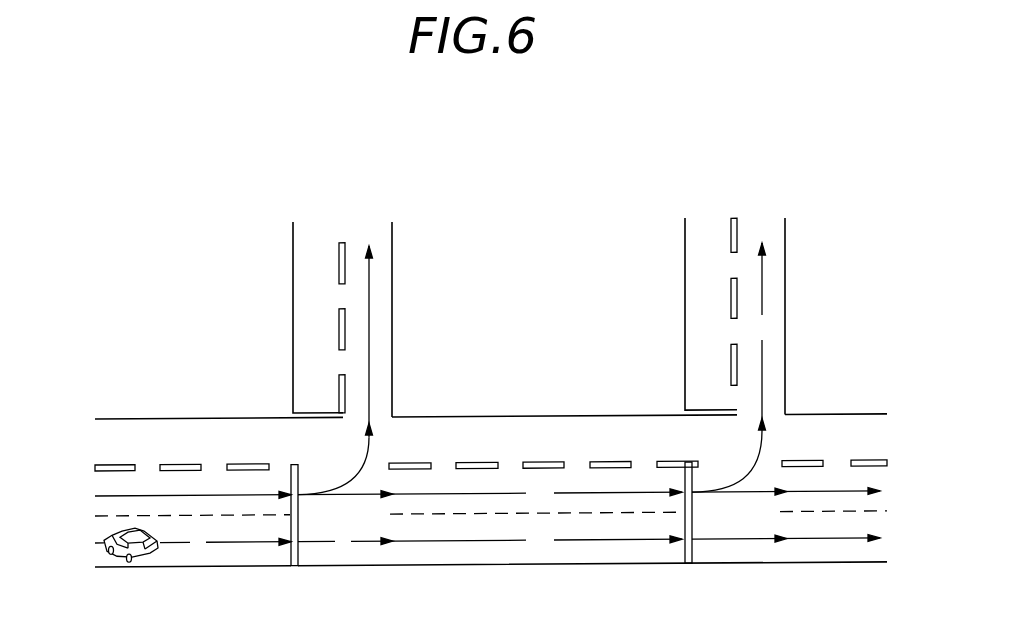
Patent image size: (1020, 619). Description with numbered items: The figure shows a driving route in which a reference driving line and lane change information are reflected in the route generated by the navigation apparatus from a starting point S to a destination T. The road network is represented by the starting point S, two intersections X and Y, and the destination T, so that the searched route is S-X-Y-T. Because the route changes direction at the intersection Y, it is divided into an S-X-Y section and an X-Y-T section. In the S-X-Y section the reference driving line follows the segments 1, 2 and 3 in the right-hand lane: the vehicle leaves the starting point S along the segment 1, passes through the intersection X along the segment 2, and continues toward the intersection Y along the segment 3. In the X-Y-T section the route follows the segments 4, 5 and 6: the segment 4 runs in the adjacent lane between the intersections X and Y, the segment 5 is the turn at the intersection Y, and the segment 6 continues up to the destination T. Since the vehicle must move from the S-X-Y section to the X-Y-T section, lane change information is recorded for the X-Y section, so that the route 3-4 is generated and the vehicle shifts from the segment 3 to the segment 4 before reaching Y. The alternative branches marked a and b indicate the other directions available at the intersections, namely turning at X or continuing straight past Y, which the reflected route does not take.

The driving route segment 1 is at (225, 544).
The driving route segment 2 is at (345, 543).
The driving route segment 3 is at (537, 542).
The driving route segment 4 is at (490, 493).
The driving route segment 5 is at (729, 455).
The driving route segment 6 is at (762, 337).
The starting point S is at (112, 545).
The destination T is at (761, 221).
The intersection X is at (321, 531).
The intersection Y is at (712, 529).
The left-turn route at intersection X a is at (234, 347).
The straight-ahead route past intersection Y b is at (799, 510).